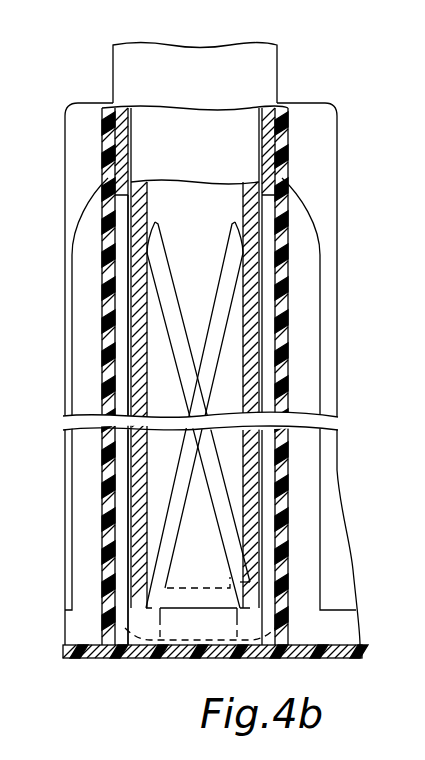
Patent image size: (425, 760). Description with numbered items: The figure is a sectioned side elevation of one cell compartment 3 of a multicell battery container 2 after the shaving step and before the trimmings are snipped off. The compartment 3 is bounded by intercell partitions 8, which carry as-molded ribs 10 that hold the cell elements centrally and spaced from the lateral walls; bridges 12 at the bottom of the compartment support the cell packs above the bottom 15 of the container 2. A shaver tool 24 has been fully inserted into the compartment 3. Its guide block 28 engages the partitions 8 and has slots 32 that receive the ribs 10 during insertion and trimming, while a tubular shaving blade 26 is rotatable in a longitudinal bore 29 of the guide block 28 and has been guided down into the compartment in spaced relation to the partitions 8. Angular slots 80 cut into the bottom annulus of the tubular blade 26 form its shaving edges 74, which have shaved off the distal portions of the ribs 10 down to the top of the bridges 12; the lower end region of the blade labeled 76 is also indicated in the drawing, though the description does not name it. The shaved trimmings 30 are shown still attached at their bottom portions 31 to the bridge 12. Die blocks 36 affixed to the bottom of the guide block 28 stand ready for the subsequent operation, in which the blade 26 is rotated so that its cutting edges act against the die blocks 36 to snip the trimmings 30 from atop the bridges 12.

The multicell battery container 2 is at (342, 228).
The cell compartment 3 is at (280, 217).
The intercell partitions 8 is at (283, 295).
The ribs 10 is at (272, 340).
The bridges 12 is at (135, 643).
The bottom 15 is at (175, 653).
The shaver tool 24 is at (128, 388).
The tubular shaving blade 26 is at (135, 484).
The guide block 28 is at (262, 150).
The longitudinal bore 29 is at (128, 158).
The trimmings 30 is at (223, 300).
The bottom portions 31 is at (237, 593).
The slots 32 is at (118, 175).
The die blocks 36 is at (227, 642).
The shaving edges 74 is at (258, 628).
The stop 76 is at (138, 582).
The angular slots 80 is at (240, 582).